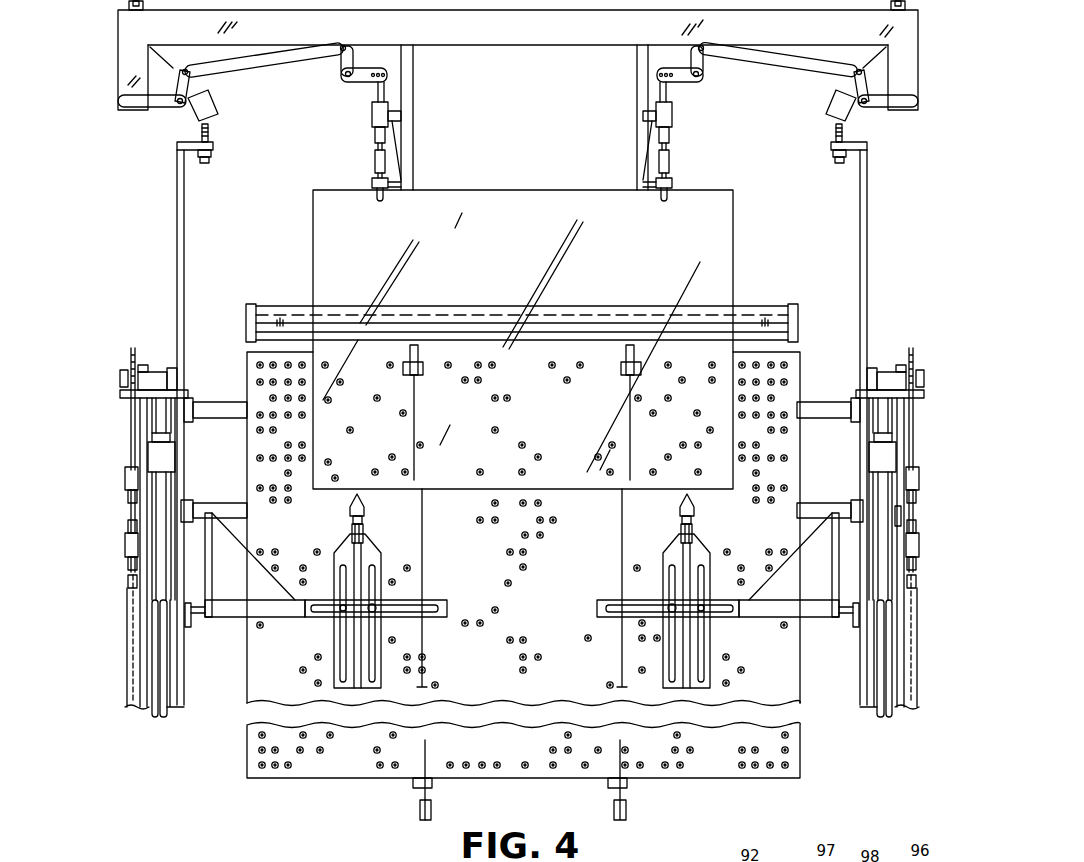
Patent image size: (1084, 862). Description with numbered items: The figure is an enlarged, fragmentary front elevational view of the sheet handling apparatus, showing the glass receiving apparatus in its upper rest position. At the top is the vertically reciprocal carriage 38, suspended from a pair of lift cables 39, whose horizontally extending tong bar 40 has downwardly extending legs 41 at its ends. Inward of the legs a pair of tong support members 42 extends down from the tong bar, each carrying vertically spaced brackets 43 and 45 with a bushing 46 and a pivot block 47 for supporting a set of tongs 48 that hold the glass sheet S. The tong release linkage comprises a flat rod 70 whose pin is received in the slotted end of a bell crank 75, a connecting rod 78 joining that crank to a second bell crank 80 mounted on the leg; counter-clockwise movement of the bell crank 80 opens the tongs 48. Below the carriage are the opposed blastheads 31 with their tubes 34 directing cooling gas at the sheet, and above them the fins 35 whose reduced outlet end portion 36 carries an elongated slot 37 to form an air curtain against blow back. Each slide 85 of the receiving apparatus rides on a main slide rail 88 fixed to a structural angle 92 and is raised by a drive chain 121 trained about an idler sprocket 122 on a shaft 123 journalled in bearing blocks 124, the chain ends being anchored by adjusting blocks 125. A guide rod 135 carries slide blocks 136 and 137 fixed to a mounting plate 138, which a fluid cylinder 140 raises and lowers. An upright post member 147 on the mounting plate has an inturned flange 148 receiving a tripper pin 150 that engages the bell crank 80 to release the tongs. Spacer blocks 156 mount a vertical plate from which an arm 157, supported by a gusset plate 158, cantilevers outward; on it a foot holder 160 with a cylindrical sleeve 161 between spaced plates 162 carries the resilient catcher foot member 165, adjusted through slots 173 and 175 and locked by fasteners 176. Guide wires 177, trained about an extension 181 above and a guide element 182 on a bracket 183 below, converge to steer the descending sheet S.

The blasthead 31 is at (233, 778).
The tubes 34 is at (258, 410).
The fin 35 is at (775, 298).
The reduced outlet end portion 36 is at (250, 302).
The elongated slot 37 is at (295, 300).
The carriage 38 is at (932, 64).
The lift cables 39 is at (127, 4).
The tong bar 40 is at (533, 47).
The legs 41 is at (127, 66).
The tong support members 42 is at (408, 80).
The bracket 43 is at (402, 115).
The bracket 45 is at (395, 186).
The bushing 46 is at (370, 122).
The pivot block 47 is at (372, 197).
The tongs 48 is at (368, 164).
The flat rod 70 is at (376, 104).
The bell crank 75 is at (355, 80).
The connecting rod 78 is at (240, 64).
The bell crank 80 is at (192, 105).
The slide 85 is at (145, 598).
The main slide rail 88 is at (155, 716).
The structural angle 92 is at (177, 704).
The drive chain 121 is at (128, 430).
The idler sprocket 122 is at (130, 352).
The shaft 123 is at (160, 373).
The bearing blocks 124 is at (143, 365).
The adjusting blocks 125 is at (127, 478).
The guide rod 135 is at (157, 508).
The slide block 136 is at (167, 460).
The slide block 137 is at (135, 582).
The mounting plate 138 is at (175, 492).
The fluid cylinder 140 is at (901, 520).
The post member 147 is at (175, 220).
The inturned flange 148 is at (193, 163).
The tripper pin 150 is at (208, 132).
The spacer blocks 156 is at (195, 530).
The arm 157 is at (222, 614).
The gusset plate 158 is at (233, 547).
The foot holder 160 is at (388, 553).
The cylindrical sleeve 161 is at (360, 532).
The plates 162 is at (340, 552).
The catcher foot member 165 is at (382, 503).
The elongated slot 173 is at (432, 612).
The elongated slot 175 is at (343, 653).
The fasteners 176 is at (343, 612).
The guide wires 177 is at (622, 660).
The extension 181 is at (423, 362).
The guide element 182 is at (420, 815).
The bracket 183 is at (412, 783).
The sheet S is at (503, 200).